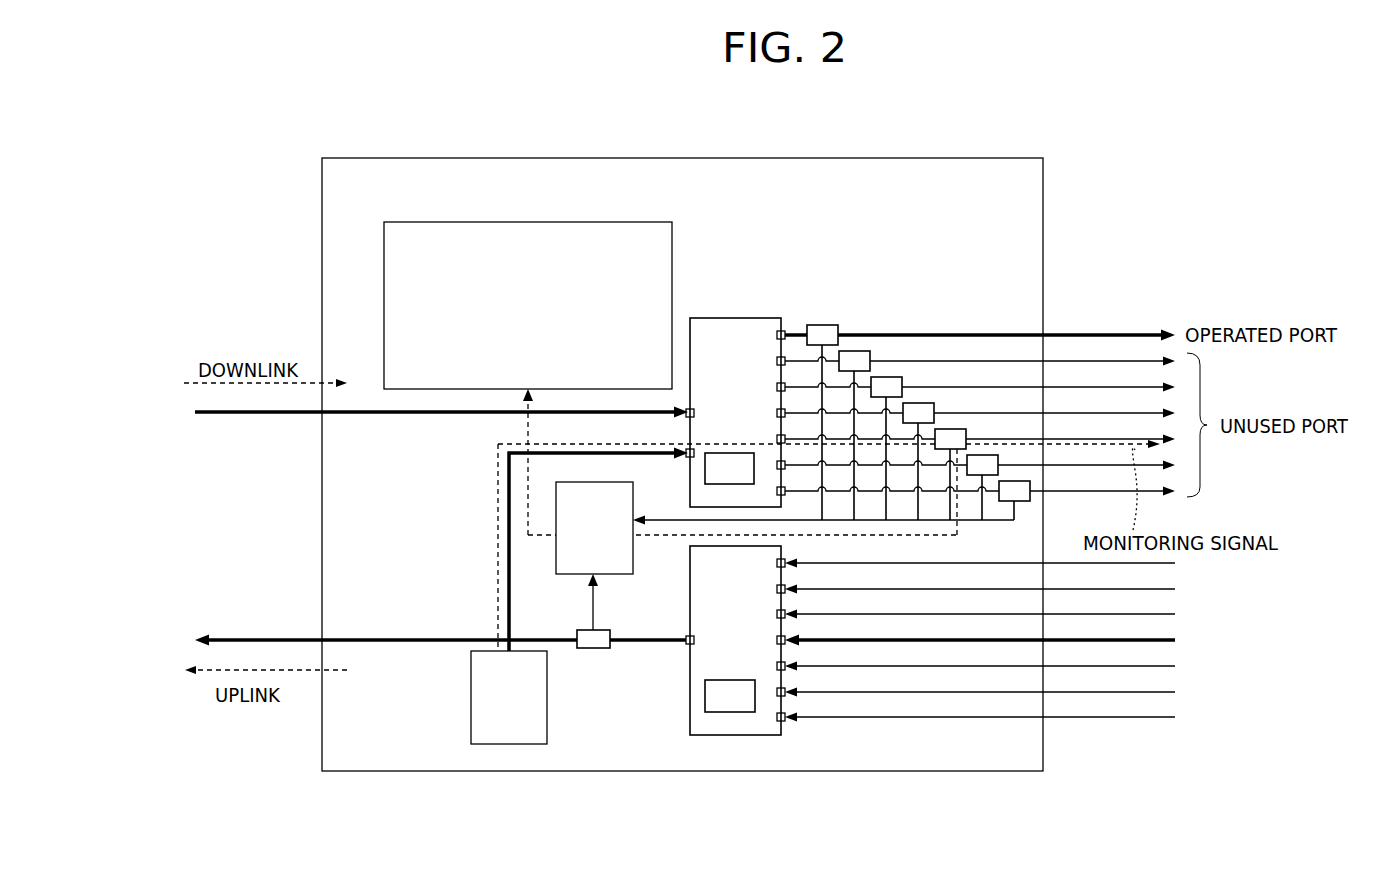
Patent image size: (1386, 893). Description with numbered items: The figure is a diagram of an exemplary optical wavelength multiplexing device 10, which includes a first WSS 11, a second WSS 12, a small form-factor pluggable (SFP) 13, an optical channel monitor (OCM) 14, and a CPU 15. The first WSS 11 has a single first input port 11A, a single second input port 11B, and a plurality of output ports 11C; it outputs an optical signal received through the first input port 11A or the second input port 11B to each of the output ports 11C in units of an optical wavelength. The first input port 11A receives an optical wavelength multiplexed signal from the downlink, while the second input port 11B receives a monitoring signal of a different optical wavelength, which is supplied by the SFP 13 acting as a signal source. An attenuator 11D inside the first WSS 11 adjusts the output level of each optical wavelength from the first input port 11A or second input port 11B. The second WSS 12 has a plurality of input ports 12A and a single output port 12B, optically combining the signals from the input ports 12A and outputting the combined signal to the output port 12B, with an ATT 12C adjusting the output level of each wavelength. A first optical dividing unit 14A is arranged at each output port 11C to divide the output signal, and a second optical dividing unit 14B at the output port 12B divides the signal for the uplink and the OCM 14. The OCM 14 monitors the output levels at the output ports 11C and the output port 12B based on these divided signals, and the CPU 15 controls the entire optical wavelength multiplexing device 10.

The optical wavelength multiplexing device 10 is at (906, 152).
The first WSS 11 is at (701, 392).
The first input port 11A is at (690, 418).
The second input port 11B is at (690, 458).
The output ports 11C is at (771, 335).
The attenuator 11D is at (722, 485).
The second WSS 12 is at (703, 657).
The input ports 12A is at (771, 563).
The output port 12B is at (690, 646).
The ATT 12C is at (730, 712).
The small form-factor pluggable 13 is at (547, 718).
The optical channel monitor 14 is at (568, 574).
The first optical dividing units 14A is at (887, 377).
The second optical dividing unit 14B is at (593, 648).
The CPU 15 is at (672, 250).